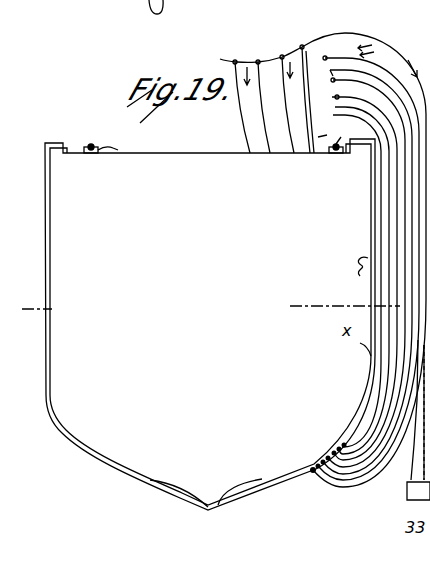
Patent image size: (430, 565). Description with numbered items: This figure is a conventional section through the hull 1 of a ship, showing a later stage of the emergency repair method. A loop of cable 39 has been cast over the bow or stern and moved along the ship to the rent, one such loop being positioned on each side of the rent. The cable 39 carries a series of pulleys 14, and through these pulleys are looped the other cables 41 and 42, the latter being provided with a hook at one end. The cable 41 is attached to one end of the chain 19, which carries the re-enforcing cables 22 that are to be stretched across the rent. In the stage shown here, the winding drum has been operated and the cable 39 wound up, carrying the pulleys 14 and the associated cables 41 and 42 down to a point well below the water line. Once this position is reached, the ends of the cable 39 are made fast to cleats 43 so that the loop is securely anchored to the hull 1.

The hull 1 is at (103, 462).
The pulleys 14 is at (312, 474).
The chain 19 is at (269, 57).
The re-enforcing cables 22 is at (267, 127).
The cable 39 is at (163, 493).
The cable 41 is at (357, 34).
The cable 42 is at (335, 97).
The cleats 43 is at (90, 143).